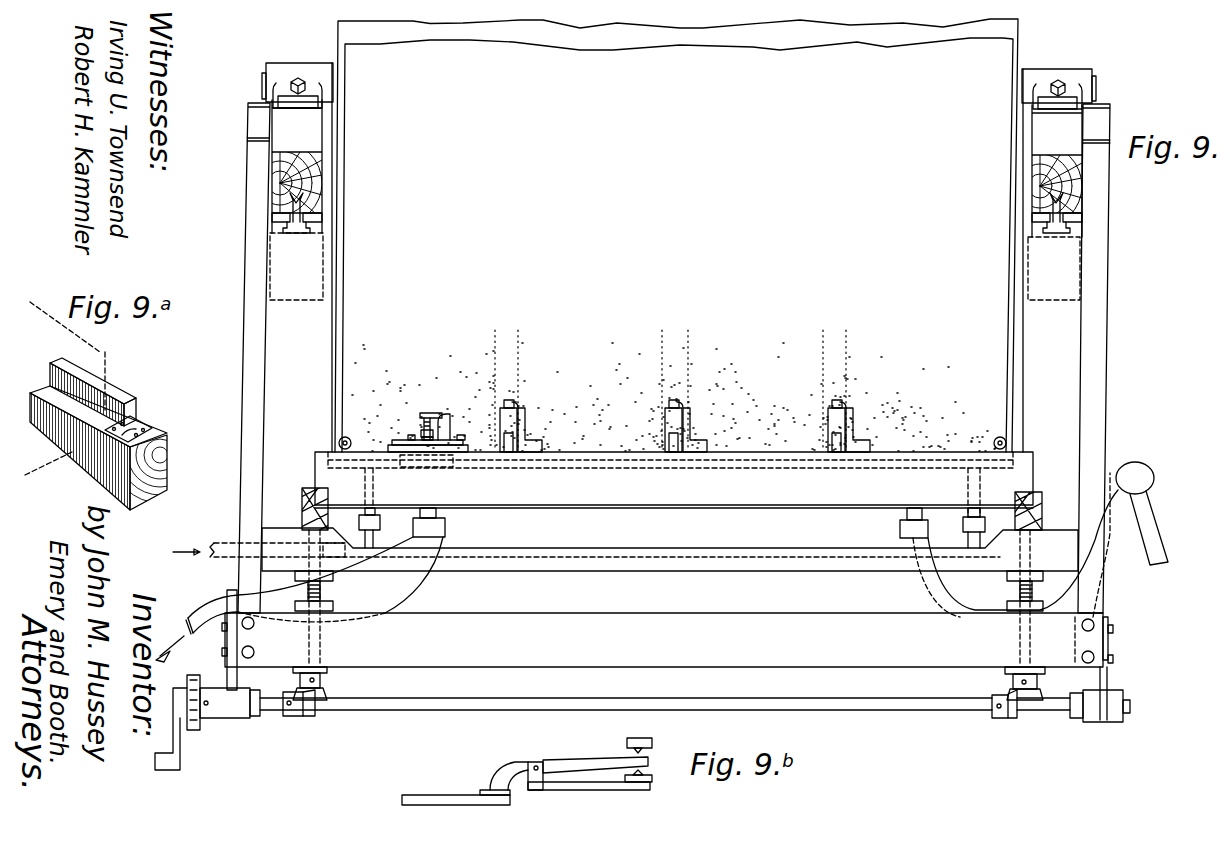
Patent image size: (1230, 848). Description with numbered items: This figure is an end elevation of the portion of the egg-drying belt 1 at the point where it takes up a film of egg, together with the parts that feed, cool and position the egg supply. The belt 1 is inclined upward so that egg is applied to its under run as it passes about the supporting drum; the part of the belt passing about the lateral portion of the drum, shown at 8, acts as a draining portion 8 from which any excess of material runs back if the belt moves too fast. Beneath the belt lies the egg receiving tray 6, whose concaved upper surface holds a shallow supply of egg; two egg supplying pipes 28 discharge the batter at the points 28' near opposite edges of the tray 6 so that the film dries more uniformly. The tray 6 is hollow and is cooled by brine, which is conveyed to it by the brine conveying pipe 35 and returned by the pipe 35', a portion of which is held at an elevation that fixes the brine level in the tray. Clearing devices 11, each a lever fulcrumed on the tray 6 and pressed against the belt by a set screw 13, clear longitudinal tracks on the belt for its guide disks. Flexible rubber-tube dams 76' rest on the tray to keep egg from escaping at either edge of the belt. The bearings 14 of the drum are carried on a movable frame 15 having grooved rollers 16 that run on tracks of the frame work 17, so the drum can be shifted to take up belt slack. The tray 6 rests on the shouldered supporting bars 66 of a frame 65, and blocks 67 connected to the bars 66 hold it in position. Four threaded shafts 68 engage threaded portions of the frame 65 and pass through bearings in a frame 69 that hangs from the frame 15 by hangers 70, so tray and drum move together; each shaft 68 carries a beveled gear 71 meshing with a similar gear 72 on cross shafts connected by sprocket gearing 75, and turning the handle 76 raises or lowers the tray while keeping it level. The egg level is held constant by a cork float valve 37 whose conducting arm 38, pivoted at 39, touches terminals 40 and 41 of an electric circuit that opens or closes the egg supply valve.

In FIG. 9, the belt 1 is at (340, 327).
In FIG. 9, the egg receiving tray 6 is at (1020, 478).
In FIG. 9A, the egg receiving tray 6 is at (108, 358).
In FIG. 9, the draining portion of the belt 8 is at (222, 116).
In FIG. 9, the clearing device 11 is at (513, 407).
In FIG. 9, the set screw 13 is at (522, 410).
In FIG. 9, the bearings 14 is at (263, 87).
In FIG. 9, the movable frame 15 is at (300, 184).
In FIG. 9, the grooved rollers 16 is at (272, 206).
In FIG. 9, the frame work 17 is at (1065, 253).
In FIG. 9, the egg supplying pipes 28 is at (586, 531).
In FIG. 9, the discharge points 28' is at (672, 508).
In FIG. 9, the brine conveying pipe 35 is at (299, 599).
In FIG. 9, the brine return pipe 35' is at (1062, 539).
In FIG. 9B, the float valve 37 is at (452, 795).
In FIG. 9B, the arm 38 is at (520, 762).
In FIG. 9, the pivot 39 is at (445, 440).
In FIG. 9B, the pivot 39 is at (592, 758).
In FIG. 9, the terminal 40 is at (427, 420).
In FIG. 9B, the terminal 40 is at (631, 733).
In FIG. 9, the terminal 41 is at (426, 432).
In FIG. 9B, the terminal 41 is at (637, 790).
In FIG. 9, the frame 65 is at (1060, 566).
In FIG. 9, the shouldered supporting bars 66 is at (305, 498).
In FIG. 9A, the shouldered supporting bars 66 is at (168, 456).
In FIG. 9A, the blocks 67 is at (133, 421).
In FIG. 9, the threaded shafts 68 is at (323, 596).
In FIG. 9, the frame 69 is at (1065, 643).
In FIG. 9, the hangers 70 is at (1100, 352).
In FIG. 9, the beveled gear 71 is at (328, 683).
In FIG. 9, the beveled gear 72 is at (302, 716).
In FIG. 9, the sprocket gearing 75 is at (200, 728).
In FIG. 9, the handle 76 is at (188, 745).
In FIG. 9, the dams 76' is at (676, 424).